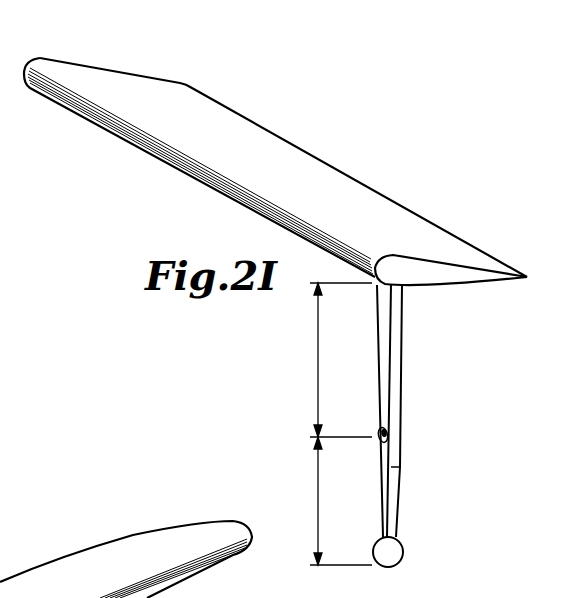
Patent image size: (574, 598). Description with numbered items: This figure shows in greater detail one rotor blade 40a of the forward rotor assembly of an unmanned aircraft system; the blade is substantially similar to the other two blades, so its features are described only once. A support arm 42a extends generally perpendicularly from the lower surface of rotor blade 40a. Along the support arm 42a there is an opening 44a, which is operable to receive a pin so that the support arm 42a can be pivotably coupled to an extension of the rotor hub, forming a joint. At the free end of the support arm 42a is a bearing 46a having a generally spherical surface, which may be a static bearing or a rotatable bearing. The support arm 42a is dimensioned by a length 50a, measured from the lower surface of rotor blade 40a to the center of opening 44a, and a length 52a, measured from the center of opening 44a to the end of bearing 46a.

The rotor blade 40a is at (217, 116).
The support arm 42a is at (397, 356).
The opening 44a is at (382, 432).
The bearing 46a is at (401, 553).
The length 50a is at (334, 360).
The length 52a is at (334, 501).